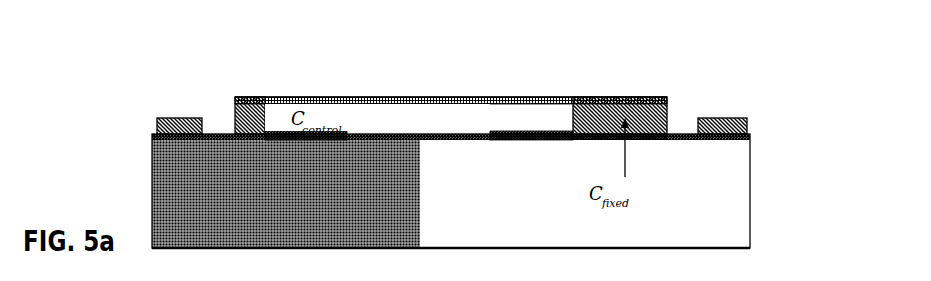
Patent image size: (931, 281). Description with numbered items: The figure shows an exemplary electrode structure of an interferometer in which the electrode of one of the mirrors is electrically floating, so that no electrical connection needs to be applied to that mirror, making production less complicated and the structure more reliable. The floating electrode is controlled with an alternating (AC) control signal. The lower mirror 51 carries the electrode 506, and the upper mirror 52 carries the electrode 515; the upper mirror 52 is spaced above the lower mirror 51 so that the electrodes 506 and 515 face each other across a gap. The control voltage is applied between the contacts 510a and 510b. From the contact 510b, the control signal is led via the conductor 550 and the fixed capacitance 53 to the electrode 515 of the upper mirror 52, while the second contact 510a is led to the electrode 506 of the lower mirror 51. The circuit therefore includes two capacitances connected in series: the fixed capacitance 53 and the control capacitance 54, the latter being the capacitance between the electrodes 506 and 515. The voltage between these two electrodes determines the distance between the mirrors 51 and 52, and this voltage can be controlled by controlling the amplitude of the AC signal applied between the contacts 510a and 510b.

The lower mirror 51 is at (451, 190).
The upper mirror 52 is at (451, 88).
The fixed capacitance 53 is at (644, 89).
The control capacitance 54 is at (356, 137).
The electrode of the lower mirror 506 is at (403, 163).
The contact 510a is at (215, 93).
The contact 510b is at (749, 100).
The electrode of the upper mirror 515 is at (451, 74).
The conductor 550 is at (655, 163).